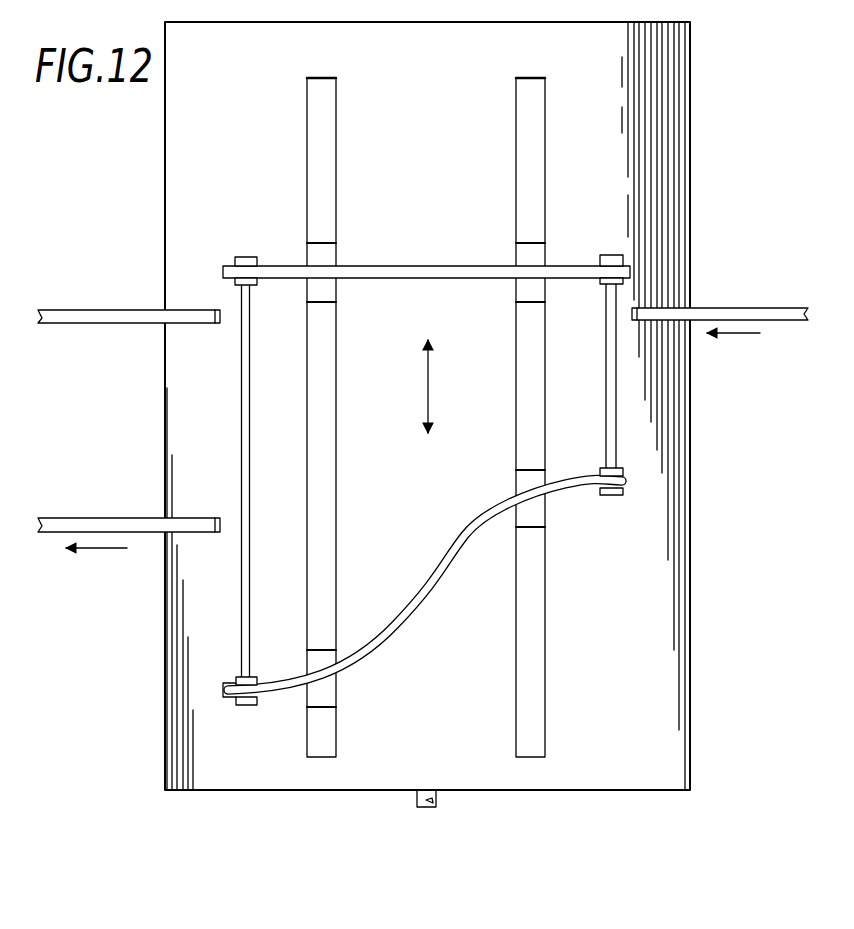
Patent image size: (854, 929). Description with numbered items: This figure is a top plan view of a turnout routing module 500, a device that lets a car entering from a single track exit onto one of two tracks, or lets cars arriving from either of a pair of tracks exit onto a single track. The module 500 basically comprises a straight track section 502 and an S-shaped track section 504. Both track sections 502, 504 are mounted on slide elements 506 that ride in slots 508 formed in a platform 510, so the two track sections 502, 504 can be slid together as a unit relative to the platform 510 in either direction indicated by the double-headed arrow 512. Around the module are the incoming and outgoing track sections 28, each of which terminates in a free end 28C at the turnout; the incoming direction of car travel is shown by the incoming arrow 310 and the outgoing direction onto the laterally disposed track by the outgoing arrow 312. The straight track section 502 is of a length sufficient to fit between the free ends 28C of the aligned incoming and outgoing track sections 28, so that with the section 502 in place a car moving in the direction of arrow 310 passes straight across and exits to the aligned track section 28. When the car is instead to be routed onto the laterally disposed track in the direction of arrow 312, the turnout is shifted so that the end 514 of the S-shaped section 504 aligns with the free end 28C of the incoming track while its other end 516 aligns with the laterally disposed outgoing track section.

The turnout routing module 500 is at (615, 50).
The straight track section 502 is at (437, 265).
The S shaped track section 504 is at (455, 525).
The slide element 506 is at (326, 285).
The slot 508 is at (332, 553).
The platform 510 is at (680, 446).
The double-headed arrow 512 is at (432, 368).
The end of S shaped track section 514 is at (624, 481).
The end of S shaped track section 516 is at (227, 692).
The track section 28 is at (100, 310).
The free end of track section 28C is at (213, 310).
The incoming arrow 310 is at (745, 335).
The outgoing arrow 312 is at (107, 550).